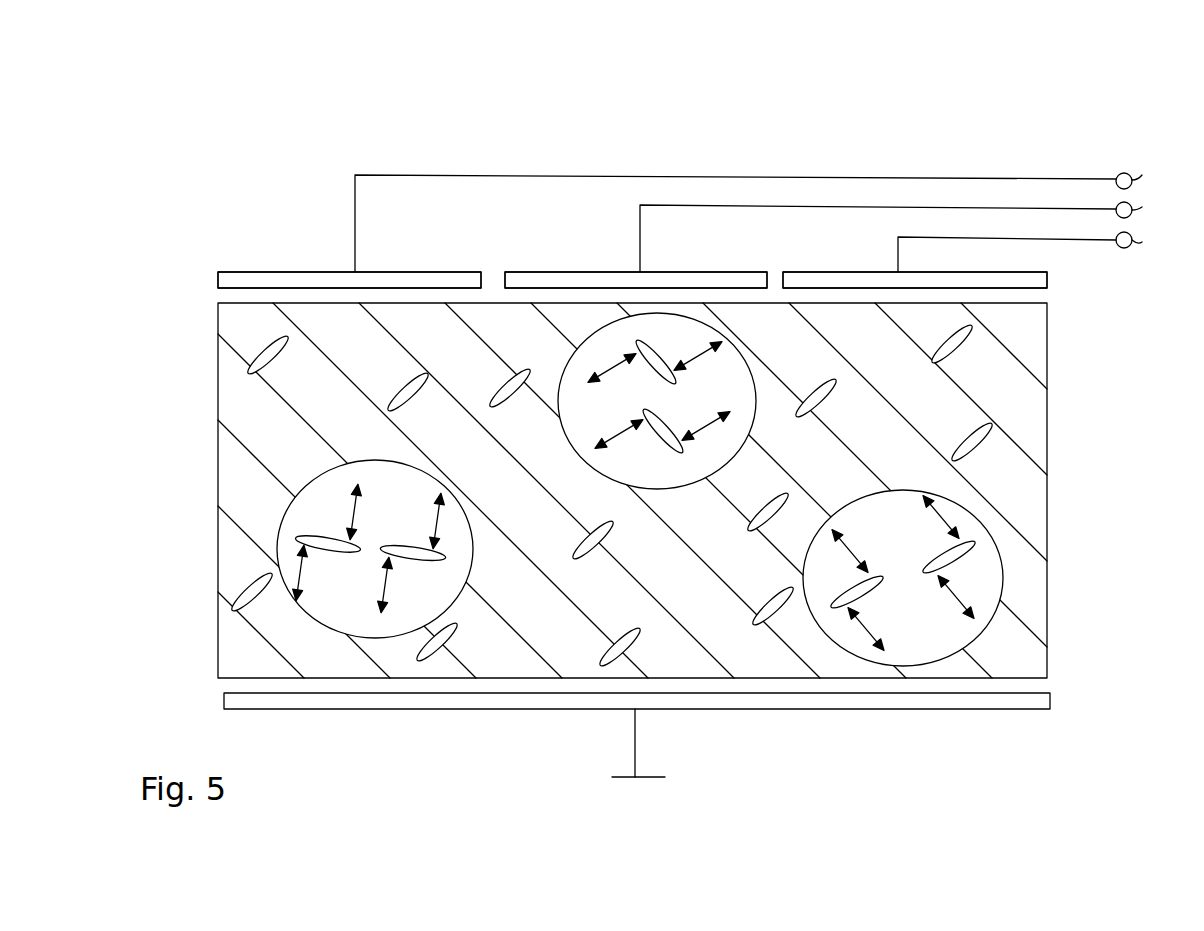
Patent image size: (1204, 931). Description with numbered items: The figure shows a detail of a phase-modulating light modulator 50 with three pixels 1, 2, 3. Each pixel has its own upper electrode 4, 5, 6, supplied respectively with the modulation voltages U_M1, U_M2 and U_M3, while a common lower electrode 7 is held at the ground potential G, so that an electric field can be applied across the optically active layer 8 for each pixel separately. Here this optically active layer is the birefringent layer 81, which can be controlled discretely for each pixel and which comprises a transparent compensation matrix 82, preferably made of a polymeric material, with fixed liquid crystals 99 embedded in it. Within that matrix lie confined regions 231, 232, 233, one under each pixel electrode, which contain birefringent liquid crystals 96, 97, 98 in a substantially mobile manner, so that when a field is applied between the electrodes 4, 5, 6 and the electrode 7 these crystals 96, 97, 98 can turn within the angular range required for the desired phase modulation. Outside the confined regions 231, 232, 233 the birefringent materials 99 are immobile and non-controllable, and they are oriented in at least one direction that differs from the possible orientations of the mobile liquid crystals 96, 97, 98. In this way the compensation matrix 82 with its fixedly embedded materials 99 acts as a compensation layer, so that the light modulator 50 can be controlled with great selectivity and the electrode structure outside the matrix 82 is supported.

The light modulator 50 is at (985, 88).
The pixel 1 is at (426, 270).
The pixel 2 is at (735, 270).
The pixel 3 is at (820, 270).
The electrode 4 is at (258, 272).
The electrode 5 is at (585, 272).
The electrode 6 is at (860, 280).
The electrode 7 is at (1052, 704).
The optically active layer 8 is at (708, 490).
The birefringent layer 81 is at (1047, 484).
The transparent compensation matrix 82 is at (1028, 410).
The birefringent liquid crystals 96 is at (427, 553).
The birefringent liquid crystals 97 is at (660, 362).
The birefringent liquid crystals 98 is at (856, 595).
The fixed liquid crystals 99 is at (252, 368).
The confined region 231 is at (311, 631).
The confined region 232 is at (657, 445).
The confined region 233 is at (903, 643).